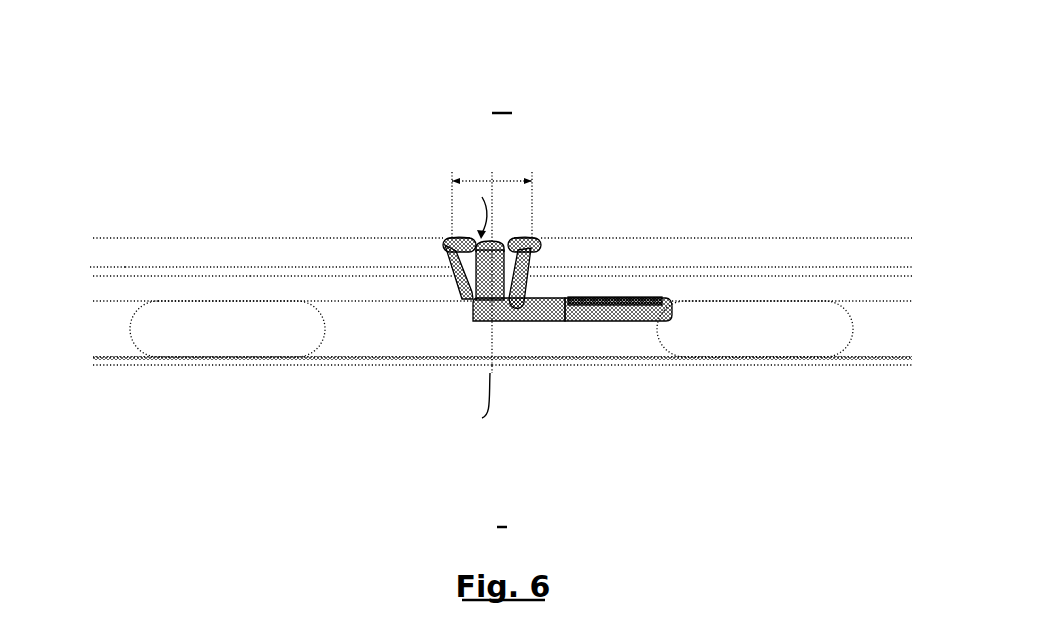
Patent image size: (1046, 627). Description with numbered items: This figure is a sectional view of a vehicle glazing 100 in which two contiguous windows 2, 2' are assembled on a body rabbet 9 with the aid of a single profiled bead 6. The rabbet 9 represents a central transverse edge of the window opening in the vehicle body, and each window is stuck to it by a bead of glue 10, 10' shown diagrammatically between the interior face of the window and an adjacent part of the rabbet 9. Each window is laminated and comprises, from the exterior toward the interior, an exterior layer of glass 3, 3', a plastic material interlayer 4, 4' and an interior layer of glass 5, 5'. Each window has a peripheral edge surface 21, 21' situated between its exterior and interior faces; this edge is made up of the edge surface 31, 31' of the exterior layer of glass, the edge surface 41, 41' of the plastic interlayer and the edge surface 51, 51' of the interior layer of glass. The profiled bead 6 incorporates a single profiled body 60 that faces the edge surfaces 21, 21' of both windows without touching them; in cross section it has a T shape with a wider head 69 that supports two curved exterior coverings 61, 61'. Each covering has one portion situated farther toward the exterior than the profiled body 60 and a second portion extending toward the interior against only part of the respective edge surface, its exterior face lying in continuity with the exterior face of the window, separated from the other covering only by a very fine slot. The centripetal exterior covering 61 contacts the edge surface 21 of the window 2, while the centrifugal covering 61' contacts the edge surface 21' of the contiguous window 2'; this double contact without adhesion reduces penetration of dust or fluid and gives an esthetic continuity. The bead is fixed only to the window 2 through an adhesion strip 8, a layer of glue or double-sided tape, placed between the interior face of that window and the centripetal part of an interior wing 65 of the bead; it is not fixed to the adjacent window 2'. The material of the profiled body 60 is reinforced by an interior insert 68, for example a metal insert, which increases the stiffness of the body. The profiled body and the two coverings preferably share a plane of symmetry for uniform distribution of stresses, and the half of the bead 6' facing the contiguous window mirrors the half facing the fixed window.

The glazing 100 is at (436, 92).
The window 2' is at (267, 260).
The window 2 is at (724, 260).
The exterior layer of glass 3' is at (111, 218).
The exterior layer of glass 3 is at (903, 223).
The plastic material interlayer 4' is at (84, 254).
The plastic material interlayer 4 is at (916, 279).
The interior layer of glass 5' is at (147, 306).
The interior layer of glass 5 is at (817, 301).
The bead of glue 10' is at (227, 350).
The bead of glue 10 is at (755, 347).
The peripheral edge surface 21' is at (351, 238).
The peripheral edge surface 21 is at (615, 241).
The rabbet 9 is at (367, 360).
The profiled bead 6 is at (516, 285).
The first half of connecting profile 6' is at (418, 227).
The edge surface 31' is at (422, 228).
The edge surface 31 is at (574, 205).
The exterior covering 61' is at (442, 196).
The exterior covering 61 is at (556, 195).
The edge surface 41' is at (417, 290).
The edge surface 41 is at (571, 259).
The edge surface 51' is at (434, 305).
The edge surface 51 is at (547, 314).
The wider head 69 is at (500, 246).
The profiled body 60 is at (483, 283).
The insert 68 is at (540, 312).
The interior wing 65 is at (622, 317).
The adhesion strip 8 is at (632, 305).